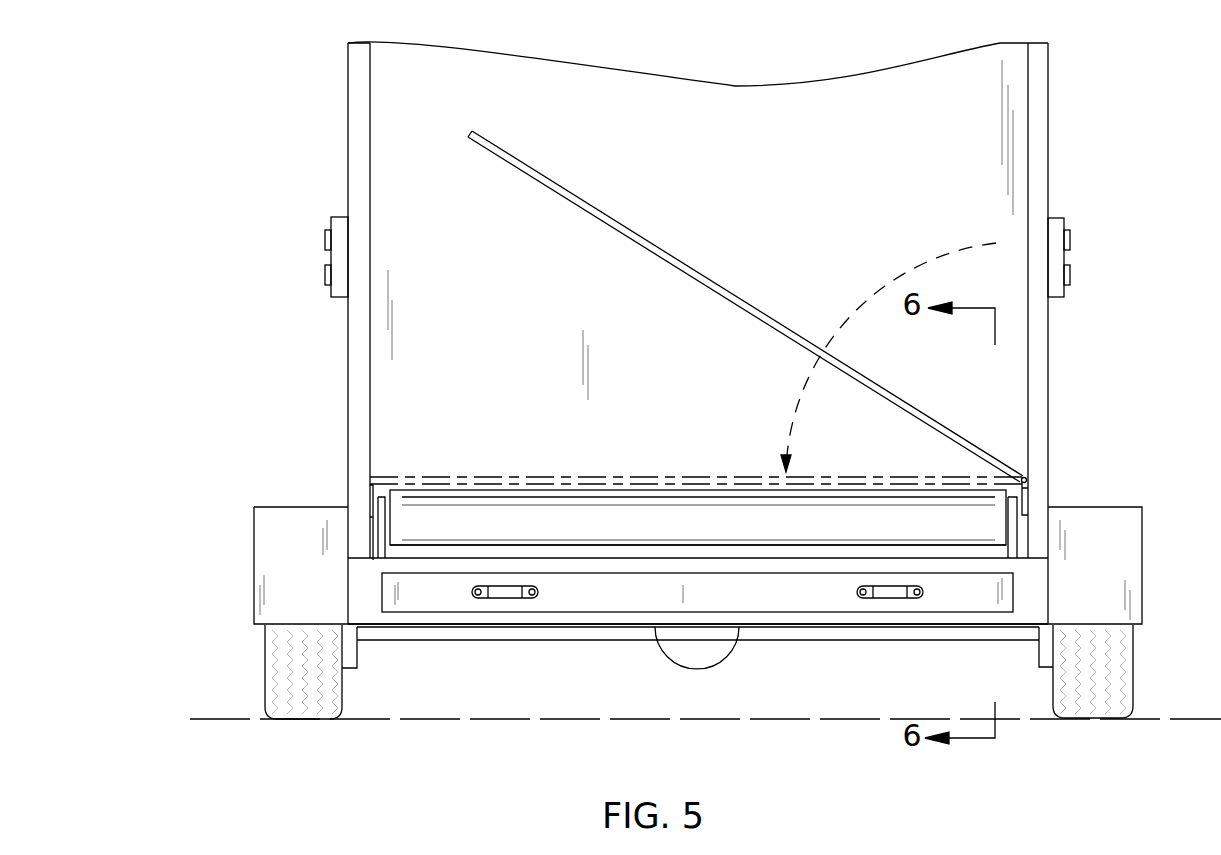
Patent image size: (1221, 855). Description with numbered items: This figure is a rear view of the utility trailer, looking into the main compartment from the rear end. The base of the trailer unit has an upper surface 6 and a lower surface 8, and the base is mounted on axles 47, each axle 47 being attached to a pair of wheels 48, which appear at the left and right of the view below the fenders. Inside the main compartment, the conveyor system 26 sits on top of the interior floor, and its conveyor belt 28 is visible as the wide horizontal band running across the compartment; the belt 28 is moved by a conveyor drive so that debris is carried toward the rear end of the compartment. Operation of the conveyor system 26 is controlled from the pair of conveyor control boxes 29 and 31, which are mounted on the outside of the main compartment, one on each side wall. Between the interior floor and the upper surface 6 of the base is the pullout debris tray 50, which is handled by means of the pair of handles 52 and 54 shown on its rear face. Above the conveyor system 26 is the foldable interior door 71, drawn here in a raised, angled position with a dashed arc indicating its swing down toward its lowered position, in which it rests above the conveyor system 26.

The upper surface 6 is at (374, 566).
The lower surface 8 is at (407, 624).
The conveyor system 26 is at (470, 546).
The conveyor belt 28 is at (563, 528).
The conveyor control box 29 is at (1055, 218).
The conveyor control box 31 is at (336, 217).
The axle 47 is at (888, 641).
The wheels 48 is at (282, 672).
The pullout debris tray 50 is at (763, 612).
The handle 52 is at (506, 600).
The handle 54 is at (885, 600).
The foldable interior door 71 is at (594, 214).